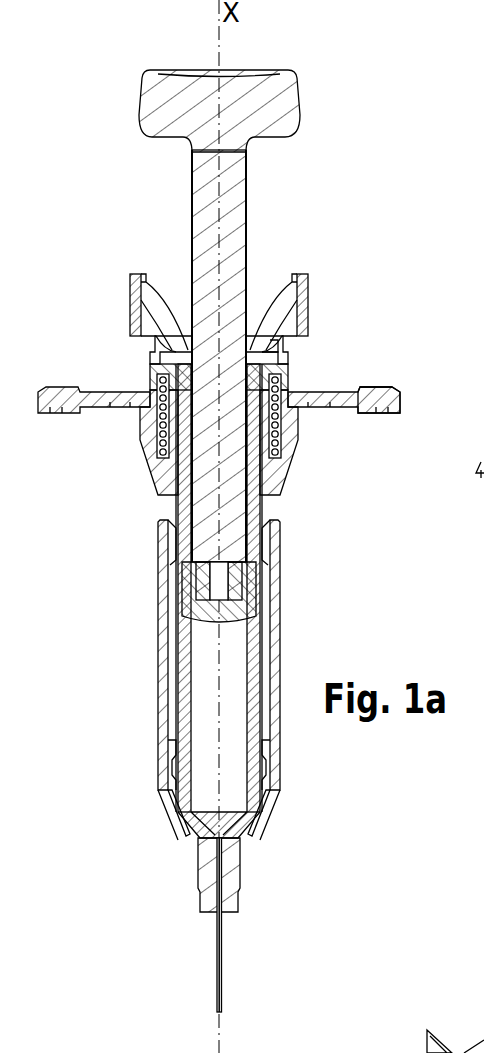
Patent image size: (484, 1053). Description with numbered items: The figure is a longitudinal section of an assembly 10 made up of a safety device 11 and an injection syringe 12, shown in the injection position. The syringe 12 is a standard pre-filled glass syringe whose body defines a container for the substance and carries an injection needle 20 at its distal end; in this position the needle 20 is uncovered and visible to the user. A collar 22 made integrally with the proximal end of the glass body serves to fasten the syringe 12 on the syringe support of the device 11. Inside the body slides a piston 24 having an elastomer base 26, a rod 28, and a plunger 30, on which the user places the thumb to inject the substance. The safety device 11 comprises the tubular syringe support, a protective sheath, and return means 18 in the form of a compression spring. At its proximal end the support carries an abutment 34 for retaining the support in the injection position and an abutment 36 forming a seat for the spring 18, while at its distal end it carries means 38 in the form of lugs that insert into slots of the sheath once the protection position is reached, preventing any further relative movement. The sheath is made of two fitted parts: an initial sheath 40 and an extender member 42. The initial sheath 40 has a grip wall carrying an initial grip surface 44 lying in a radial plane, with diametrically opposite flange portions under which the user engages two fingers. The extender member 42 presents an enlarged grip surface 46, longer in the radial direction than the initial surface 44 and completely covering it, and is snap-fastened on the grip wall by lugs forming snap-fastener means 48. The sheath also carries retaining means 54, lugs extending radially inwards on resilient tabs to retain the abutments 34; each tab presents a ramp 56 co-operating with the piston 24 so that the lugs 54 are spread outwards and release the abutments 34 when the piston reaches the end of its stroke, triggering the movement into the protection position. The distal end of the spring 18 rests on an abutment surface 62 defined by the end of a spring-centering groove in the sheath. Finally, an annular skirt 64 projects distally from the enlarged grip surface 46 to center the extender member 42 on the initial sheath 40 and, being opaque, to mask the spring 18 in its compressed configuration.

The assembly 10 is at (122, 200).
The safety device 11 is at (221, 602).
The injection syringe 12 is at (213, 925).
The return means 18 is at (280, 430).
The injection needle 20 is at (218, 972).
The collar 22 is at (165, 366).
The piston 24 is at (250, 203).
The elastomer base 26 is at (230, 622).
The rod 28 is at (205, 225).
The plunger 30 is at (193, 98).
The abutment 34 is at (303, 335).
The abutment 36 is at (153, 381).
The means for preventing the support from moving relative to the sheath 38 is at (268, 765).
The initial sheath 40 is at (160, 562).
The extender member 42 is at (108, 418).
The initial grip surface 44 is at (330, 413).
The enlarged grip surface 46 is at (380, 413).
The snap-fastener means 48 is at (365, 388).
The retaining means 54 is at (145, 345).
The ramp 56 is at (143, 318).
The abutment surface 62 is at (283, 460).
The annular skirt 64 is at (140, 443).